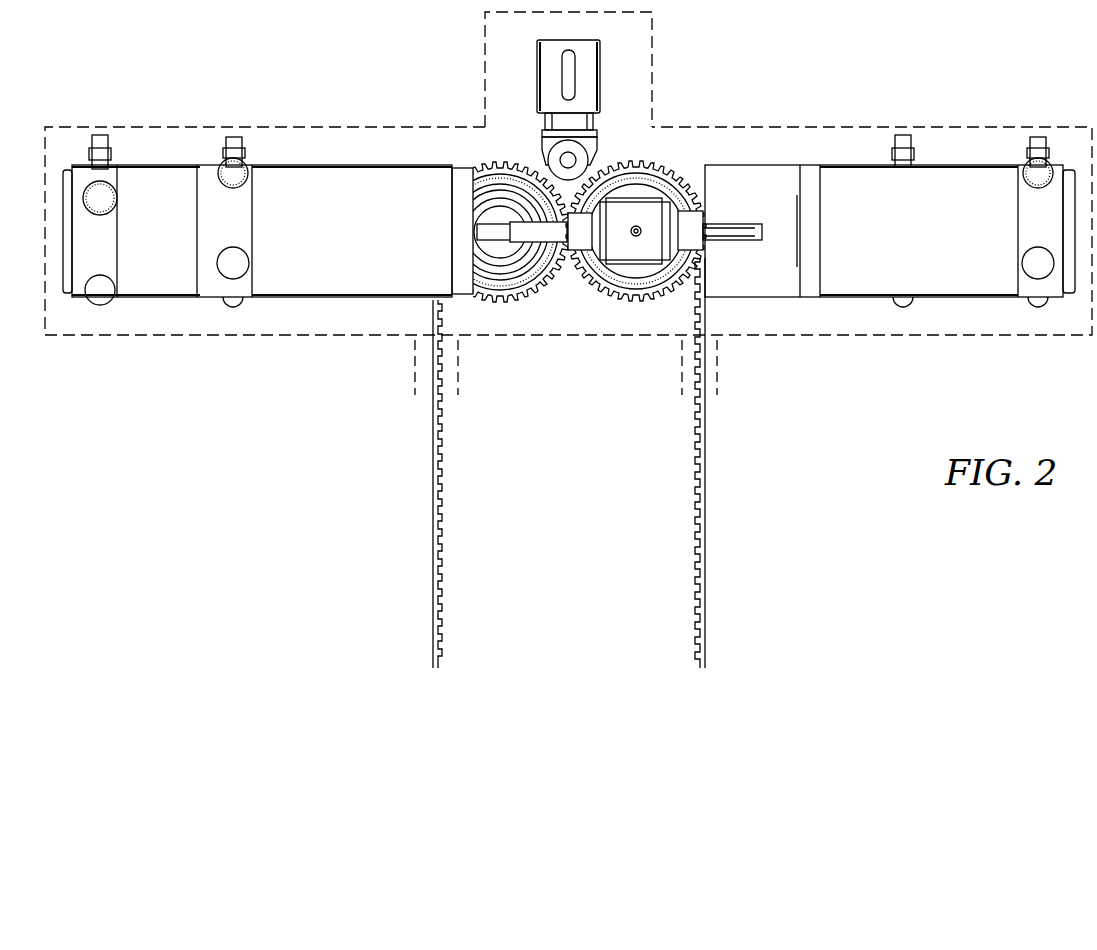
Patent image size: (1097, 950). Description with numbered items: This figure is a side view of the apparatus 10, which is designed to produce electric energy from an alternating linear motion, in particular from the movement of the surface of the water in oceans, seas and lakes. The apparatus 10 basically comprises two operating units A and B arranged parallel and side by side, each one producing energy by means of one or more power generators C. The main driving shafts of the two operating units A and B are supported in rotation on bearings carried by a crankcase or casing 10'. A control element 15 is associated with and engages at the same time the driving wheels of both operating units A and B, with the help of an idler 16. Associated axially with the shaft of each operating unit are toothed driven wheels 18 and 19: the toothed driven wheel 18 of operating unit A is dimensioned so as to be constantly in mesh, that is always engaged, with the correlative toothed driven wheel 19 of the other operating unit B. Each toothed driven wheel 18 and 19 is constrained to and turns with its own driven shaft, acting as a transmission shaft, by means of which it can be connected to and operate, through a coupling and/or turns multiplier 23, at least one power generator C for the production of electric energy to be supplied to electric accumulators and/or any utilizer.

The apparatus 10 is at (568, 203).
The crankcase or casing 10' is at (890, 171).
The control element 15 is at (547, 173).
The idler 16 is at (588, 160).
The toothed driven wheel 18 is at (590, 290).
The toothed driven wheel 19 is at (500, 162).
The coupling and/or turns multiplier 23 is at (655, 213).
The operating unit A is at (610, 325).
The operating unit B is at (508, 316).
The power generator C is at (325, 172).